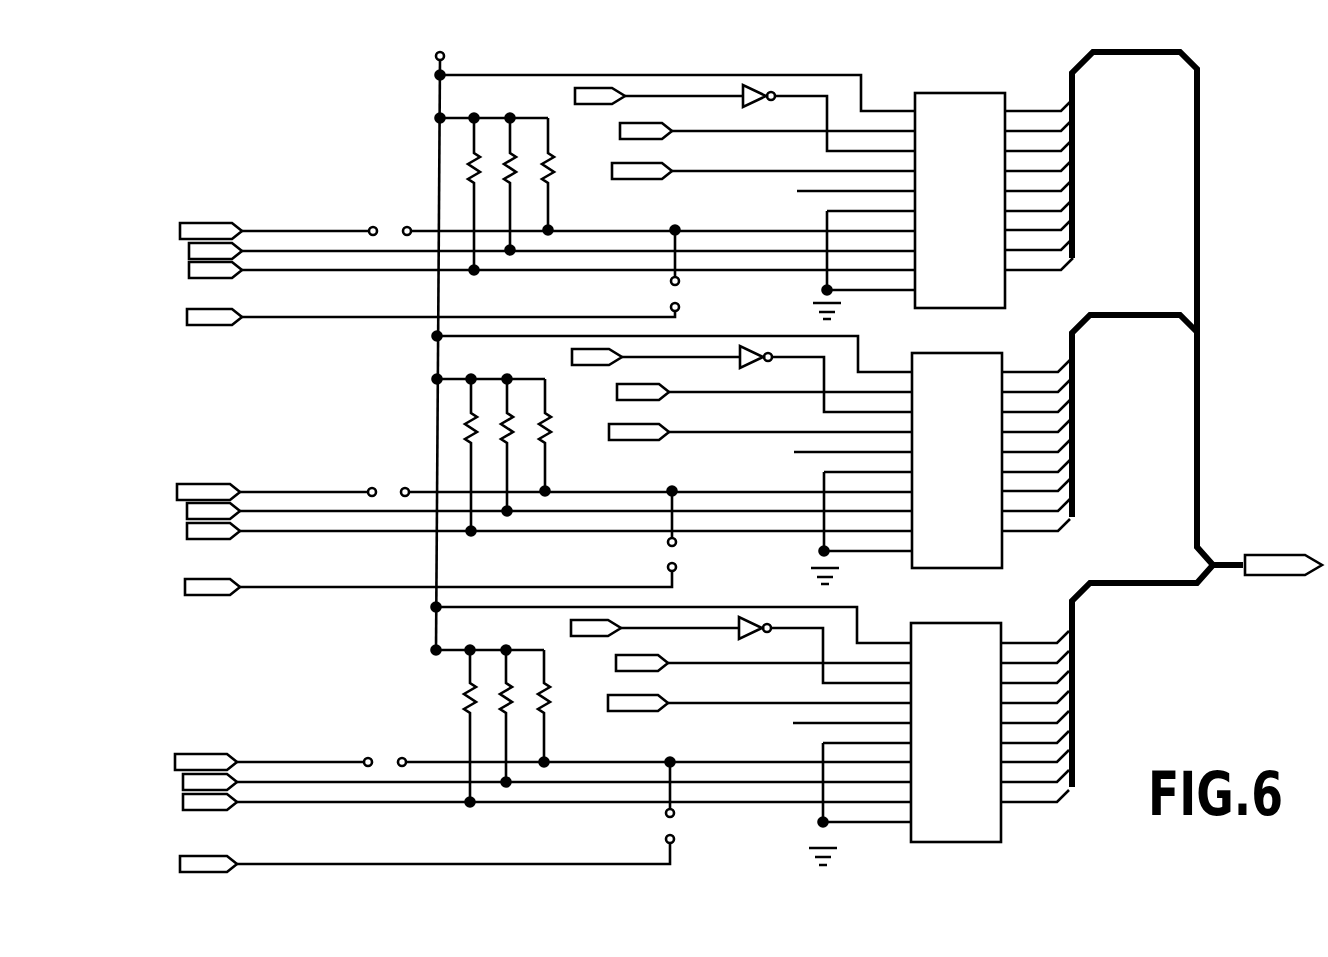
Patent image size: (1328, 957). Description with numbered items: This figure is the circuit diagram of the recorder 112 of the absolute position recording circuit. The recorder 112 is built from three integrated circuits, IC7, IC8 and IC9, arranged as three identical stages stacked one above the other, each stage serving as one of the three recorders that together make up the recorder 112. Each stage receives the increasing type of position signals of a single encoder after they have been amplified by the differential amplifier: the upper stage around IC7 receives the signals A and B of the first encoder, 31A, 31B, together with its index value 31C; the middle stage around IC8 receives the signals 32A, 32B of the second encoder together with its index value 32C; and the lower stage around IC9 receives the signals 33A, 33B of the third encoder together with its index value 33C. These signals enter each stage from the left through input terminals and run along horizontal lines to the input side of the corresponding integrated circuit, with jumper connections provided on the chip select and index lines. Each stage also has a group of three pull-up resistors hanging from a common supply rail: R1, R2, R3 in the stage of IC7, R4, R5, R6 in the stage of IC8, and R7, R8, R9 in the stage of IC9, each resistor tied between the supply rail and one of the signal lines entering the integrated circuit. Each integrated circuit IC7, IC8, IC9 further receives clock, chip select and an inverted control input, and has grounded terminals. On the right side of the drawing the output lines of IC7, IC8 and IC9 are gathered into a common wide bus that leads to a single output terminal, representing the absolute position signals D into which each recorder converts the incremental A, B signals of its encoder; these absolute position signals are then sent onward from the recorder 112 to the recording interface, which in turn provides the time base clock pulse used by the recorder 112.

The recorder 112 is at (339, 159).
The signal A of encoder 31 31A is at (527, 278).
The signal B of encoder 31 31B is at (521, 250).
The index value of encoder 31 31C is at (187, 319).
The signal A of encoder 32 32A is at (524, 540).
The signal B of encoder 32 32B is at (522, 512).
The index value of encoder 32 32C is at (184, 589).
The signal A of encoder 33 33A is at (521, 809).
The signal B of encoder 33 33B is at (519, 784).
The index value of encoder 33 33C is at (182, 867).
The integrated circuit IC7 is at (973, 110).
The integrated circuit IC8 is at (1006, 363).
The integrated circuit IC9 is at (990, 630).
The resistor R1 is at (463, 196).
The resistor R2 is at (498, 186).
The resistor R3 is at (537, 176).
The resistor R4 is at (461, 457).
The resistor R5 is at (497, 447).
The resistor R6 is at (534, 437).
The resistor R7 is at (457, 728).
The resistor R8 is at (494, 718).
The resistor R9 is at (532, 708).